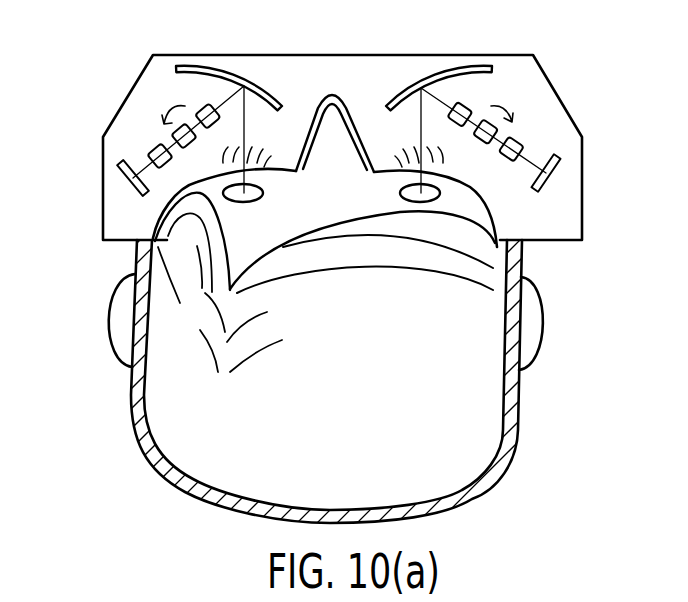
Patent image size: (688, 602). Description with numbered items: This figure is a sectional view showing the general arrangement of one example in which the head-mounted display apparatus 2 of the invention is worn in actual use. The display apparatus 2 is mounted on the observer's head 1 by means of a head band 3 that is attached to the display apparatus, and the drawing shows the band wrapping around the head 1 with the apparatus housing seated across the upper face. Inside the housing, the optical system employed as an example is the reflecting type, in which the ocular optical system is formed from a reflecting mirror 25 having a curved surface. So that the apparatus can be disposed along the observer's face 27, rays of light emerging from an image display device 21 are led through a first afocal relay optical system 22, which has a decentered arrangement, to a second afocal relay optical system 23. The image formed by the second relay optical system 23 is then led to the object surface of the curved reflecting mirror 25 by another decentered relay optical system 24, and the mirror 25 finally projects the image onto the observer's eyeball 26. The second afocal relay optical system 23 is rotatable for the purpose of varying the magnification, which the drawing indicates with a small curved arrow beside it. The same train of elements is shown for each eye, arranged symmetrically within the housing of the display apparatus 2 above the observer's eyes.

The observer's head 1 is at (480, 440).
The head-mounted display apparatus 2 is at (552, 240).
The head band 3 is at (513, 318).
The image display device 21 is at (548, 175).
The first afocal relay optical system 22 is at (517, 143).
The second afocal relay optical system 23 is at (500, 129).
The decentered relay optical system 24 is at (470, 103).
The reflecting mirror 25 is at (488, 73).
The observer's eyeball 26 is at (233, 200).
The observer's face 27 is at (180, 188).